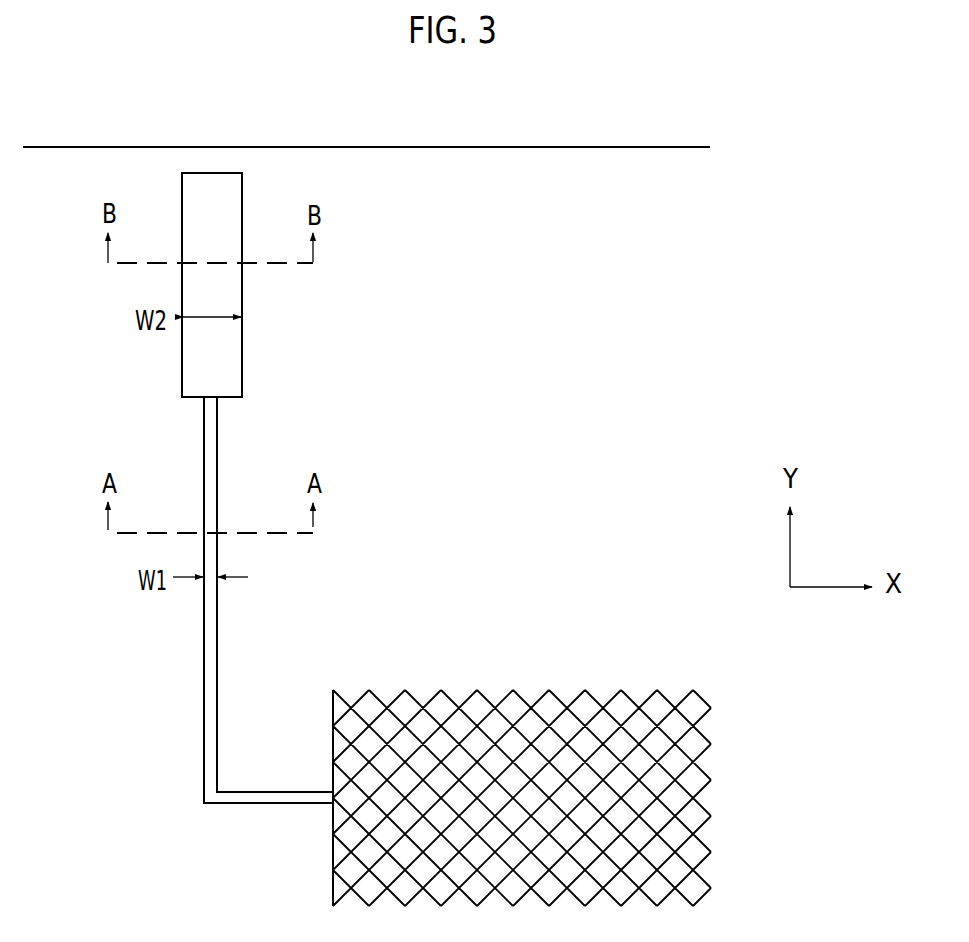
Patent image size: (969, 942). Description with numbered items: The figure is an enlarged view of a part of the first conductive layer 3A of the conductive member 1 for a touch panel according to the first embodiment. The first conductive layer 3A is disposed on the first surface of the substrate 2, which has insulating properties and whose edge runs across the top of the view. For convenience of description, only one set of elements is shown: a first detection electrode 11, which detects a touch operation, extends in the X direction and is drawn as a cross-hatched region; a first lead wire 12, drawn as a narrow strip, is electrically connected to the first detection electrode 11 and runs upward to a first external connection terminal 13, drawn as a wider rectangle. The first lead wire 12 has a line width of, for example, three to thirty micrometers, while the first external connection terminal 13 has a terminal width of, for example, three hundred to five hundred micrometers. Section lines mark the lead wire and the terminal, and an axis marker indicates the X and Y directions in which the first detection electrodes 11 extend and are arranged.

The conductive member 1 is at (667, 128).
The substrate 2 is at (508, 200).
The first conductive layer 3A is at (127, 385).
The first detection electrode 11 is at (333, 870).
The first lead wire 12 is at (212, 708).
The first external connection terminal 13 is at (213, 200).